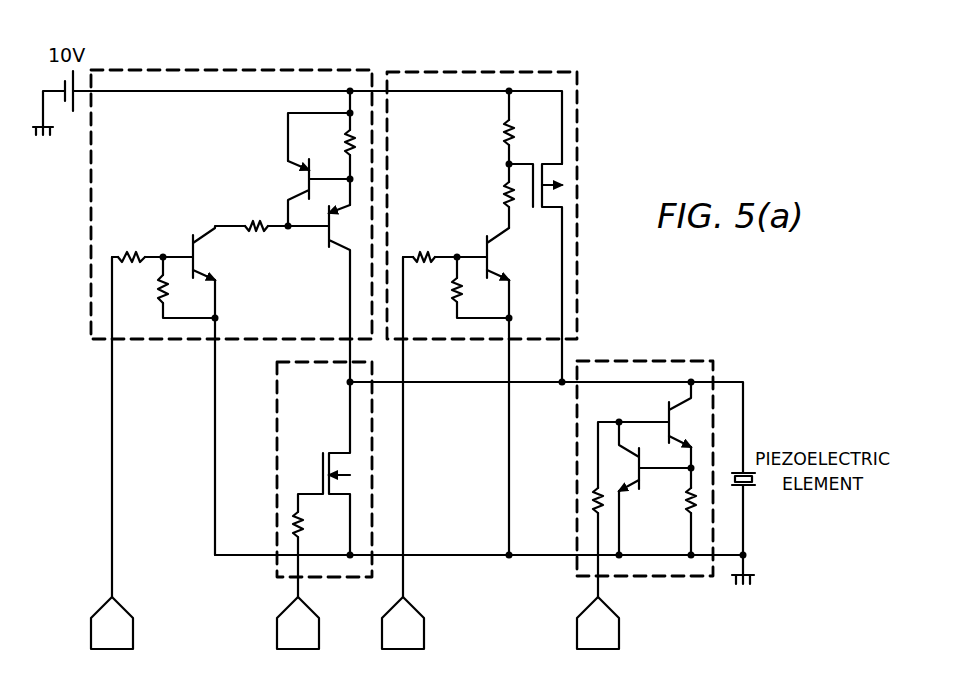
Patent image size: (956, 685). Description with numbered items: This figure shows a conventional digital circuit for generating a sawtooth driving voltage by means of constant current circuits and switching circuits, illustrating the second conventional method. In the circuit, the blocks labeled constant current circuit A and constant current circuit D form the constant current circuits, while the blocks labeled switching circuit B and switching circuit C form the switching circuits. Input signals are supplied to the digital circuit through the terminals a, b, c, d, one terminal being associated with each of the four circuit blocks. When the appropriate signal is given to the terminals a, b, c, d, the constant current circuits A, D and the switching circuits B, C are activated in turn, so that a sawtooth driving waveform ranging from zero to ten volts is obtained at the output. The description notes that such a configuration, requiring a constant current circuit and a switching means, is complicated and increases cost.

The constant current circuit A is at (231, 68).
The switching circuit B is at (276, 482).
The switching circuit C is at (494, 68).
The constant current circuit D is at (648, 358).
The terminal a is at (112, 453).
The terminal b is at (298, 623).
The terminal c is at (403, 453).
The terminal d is at (598, 623).